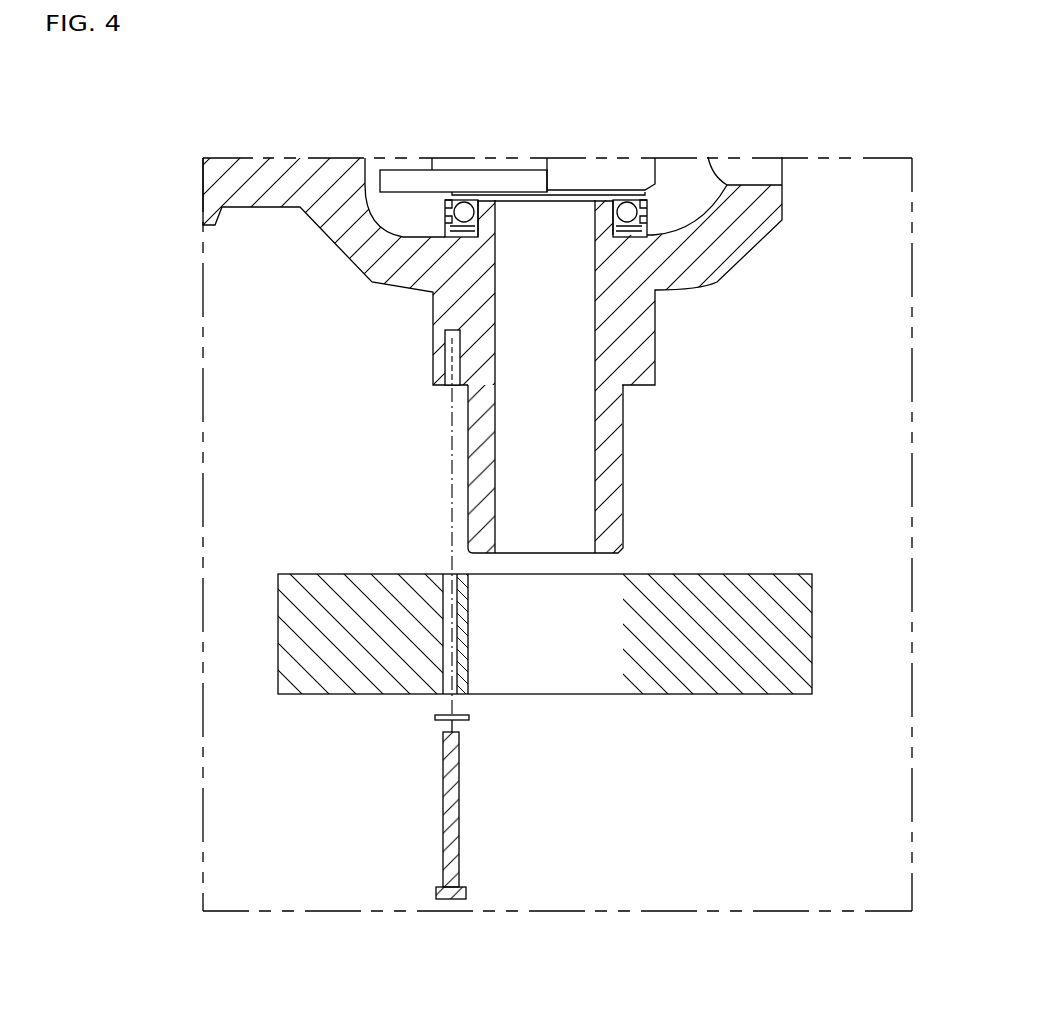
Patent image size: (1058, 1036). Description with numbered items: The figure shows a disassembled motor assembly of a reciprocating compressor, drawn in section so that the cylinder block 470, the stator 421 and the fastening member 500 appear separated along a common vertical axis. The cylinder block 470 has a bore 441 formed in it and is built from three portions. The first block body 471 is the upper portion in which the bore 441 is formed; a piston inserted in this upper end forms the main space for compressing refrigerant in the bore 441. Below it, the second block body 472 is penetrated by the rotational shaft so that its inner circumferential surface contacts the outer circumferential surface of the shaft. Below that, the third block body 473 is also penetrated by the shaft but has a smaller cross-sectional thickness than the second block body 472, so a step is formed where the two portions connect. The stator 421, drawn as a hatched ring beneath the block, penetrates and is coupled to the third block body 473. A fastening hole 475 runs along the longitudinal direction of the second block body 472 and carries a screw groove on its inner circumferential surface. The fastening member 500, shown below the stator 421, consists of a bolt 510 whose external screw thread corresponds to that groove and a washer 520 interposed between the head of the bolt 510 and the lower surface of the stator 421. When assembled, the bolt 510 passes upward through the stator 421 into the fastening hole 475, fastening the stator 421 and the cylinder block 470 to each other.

The cylinder block 470 is at (128, 172).
The first block body 471 is at (217, 178).
The second block body 472 is at (450, 317).
The third block body 473 is at (482, 466).
The fastening hole 475 is at (455, 338).
The bore 441 is at (597, 343).
The stator 421 is at (297, 640).
The fastening member 500 is at (299, 851).
The bolt 510 is at (450, 812).
The washer 520 is at (433, 717).